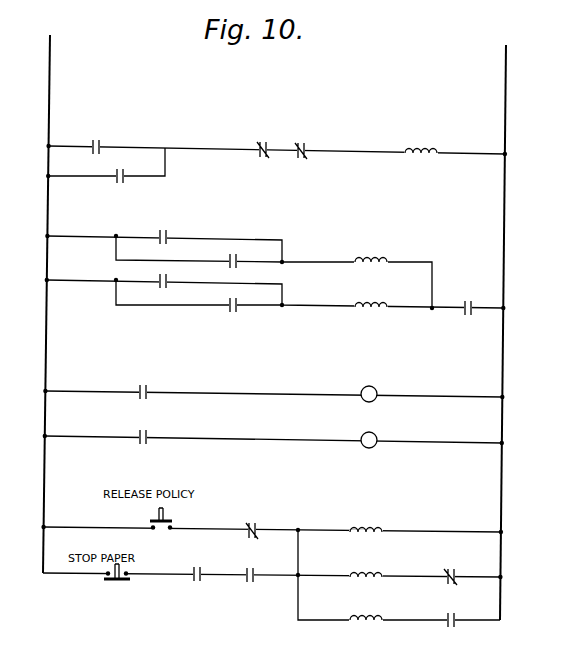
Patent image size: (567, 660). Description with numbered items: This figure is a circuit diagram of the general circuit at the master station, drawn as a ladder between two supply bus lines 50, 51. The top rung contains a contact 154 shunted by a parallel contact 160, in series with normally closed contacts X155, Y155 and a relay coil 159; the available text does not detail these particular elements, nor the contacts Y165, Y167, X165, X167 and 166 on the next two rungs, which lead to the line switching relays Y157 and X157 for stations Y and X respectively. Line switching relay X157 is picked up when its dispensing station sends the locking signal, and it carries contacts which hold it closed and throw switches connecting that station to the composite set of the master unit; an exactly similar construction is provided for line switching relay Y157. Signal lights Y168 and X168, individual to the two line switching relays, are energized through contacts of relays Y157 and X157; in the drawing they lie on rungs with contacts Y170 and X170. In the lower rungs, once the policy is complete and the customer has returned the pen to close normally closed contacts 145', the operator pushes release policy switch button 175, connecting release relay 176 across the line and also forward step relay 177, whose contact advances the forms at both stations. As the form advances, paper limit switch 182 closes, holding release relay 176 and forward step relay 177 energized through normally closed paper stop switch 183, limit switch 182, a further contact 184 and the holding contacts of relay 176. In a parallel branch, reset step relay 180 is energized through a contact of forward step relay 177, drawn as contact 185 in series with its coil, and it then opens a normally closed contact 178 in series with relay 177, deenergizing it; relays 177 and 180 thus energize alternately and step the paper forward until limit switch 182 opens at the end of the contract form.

The left supply bus line 50 is at (50, 72).
The right supply bus line 51 is at (506, 107).
The contact 154 is at (96, 143).
The contact 160 is at (118, 186).
The normally closed contact X155 is at (265, 142).
The normally closed contact Y155 is at (317, 139).
The relay coil 159 is at (422, 148).
The contact Y165 is at (168, 224).
The contact Y167 is at (233, 255).
The line switching relay Y157 is at (382, 248).
The contact X165 is at (163, 290).
The contact X167 is at (232, 314).
The line switching relay X157 is at (375, 312).
The contact 166 is at (465, 316).
The contact Y170 is at (143, 385).
The signal light Y168 is at (375, 388).
The contact X170 is at (147, 417).
The signal light X168 is at (375, 434).
The release policy switch button 175 is at (163, 531).
The normally closed contacts 145' is at (267, 520).
The release relay 176 is at (368, 527).
The paper stop switch 183 is at (108, 584).
The paper limit switch 182 is at (196, 583).
The contact 184 is at (249, 584).
The forward step relay 177 is at (370, 572).
The normally closed contact 178 is at (452, 568).
The reset step relay 180 is at (360, 626).
The contact 185 is at (449, 628).